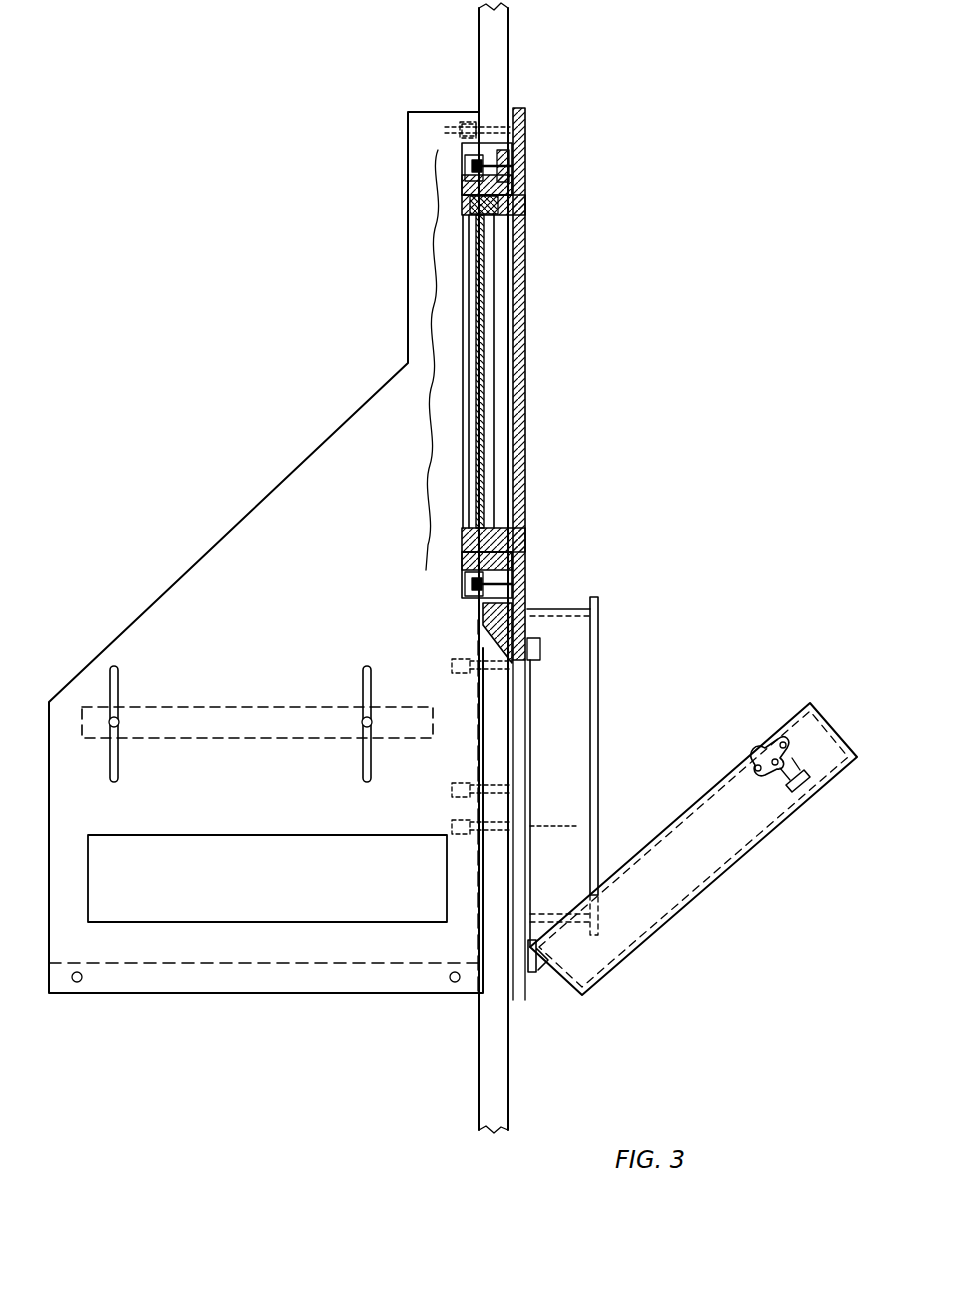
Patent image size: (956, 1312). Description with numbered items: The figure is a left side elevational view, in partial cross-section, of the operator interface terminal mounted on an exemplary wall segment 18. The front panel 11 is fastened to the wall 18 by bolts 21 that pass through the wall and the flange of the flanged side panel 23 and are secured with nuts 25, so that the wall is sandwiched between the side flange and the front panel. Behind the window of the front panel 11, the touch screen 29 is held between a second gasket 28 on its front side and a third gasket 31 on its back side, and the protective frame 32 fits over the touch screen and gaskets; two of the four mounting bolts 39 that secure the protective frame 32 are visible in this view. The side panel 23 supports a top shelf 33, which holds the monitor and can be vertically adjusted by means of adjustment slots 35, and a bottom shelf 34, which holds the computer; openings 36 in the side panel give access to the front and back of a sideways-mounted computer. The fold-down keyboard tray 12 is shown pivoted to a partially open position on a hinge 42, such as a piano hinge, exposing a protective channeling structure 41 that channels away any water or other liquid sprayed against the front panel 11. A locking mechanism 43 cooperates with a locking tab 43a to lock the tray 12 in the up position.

The front panel 11 is at (526, 117).
The fold-down tray 12 is at (728, 878).
The wall 18 is at (509, 62).
The bolts 21 is at (458, 127).
The flanged side panel 23 is at (240, 530).
The nuts 25 is at (468, 120).
The second gasket 28 is at (520, 210).
The touch screen 29 is at (484, 282).
The third gasket 31 is at (468, 208).
The protective frame 32 is at (466, 182).
The top shelf 33 is at (240, 705).
The bottom shelf 34 is at (236, 962).
The adjustment slots 35 is at (120, 686).
The openings 36 is at (200, 834).
The mounting bolts 39 is at (526, 147).
The protective channeling structure 41 is at (600, 650).
The hinge 42 is at (536, 968).
The locking mechanism 43 is at (766, 745).
The locking tab 43a is at (534, 662).